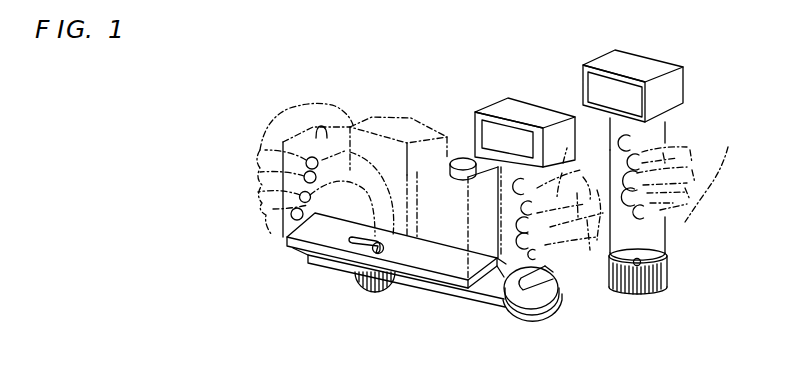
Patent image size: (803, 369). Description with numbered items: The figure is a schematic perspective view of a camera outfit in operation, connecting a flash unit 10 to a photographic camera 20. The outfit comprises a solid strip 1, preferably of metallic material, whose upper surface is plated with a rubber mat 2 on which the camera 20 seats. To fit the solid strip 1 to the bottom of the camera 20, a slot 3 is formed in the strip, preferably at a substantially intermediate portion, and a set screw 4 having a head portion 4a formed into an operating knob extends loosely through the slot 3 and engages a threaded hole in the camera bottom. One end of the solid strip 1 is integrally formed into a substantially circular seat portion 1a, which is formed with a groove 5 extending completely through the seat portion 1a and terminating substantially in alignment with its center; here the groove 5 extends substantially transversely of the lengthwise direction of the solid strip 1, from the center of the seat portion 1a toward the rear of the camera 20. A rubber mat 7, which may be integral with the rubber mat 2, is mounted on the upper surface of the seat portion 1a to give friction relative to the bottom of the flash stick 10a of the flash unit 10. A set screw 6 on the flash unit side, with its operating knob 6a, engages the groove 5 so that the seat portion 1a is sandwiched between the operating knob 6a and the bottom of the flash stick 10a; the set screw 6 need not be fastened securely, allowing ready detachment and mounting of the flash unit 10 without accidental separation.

The solid strip 1 is at (438, 291).
The seat portion 1a is at (510, 312).
The rubber mat 2 is at (283, 237).
The slot 3 is at (327, 260).
The set screw 4 is at (357, 265).
The head portion 4a is at (376, 294).
The groove 5 is at (560, 308).
The set screw 6 is at (652, 263).
The operating knob 6a is at (641, 293).
The rubber mat 7 is at (537, 316).
The flash unit 10 is at (649, 63).
The flash stick 10a is at (679, 131).
The photographic camera 20 is at (423, 113).